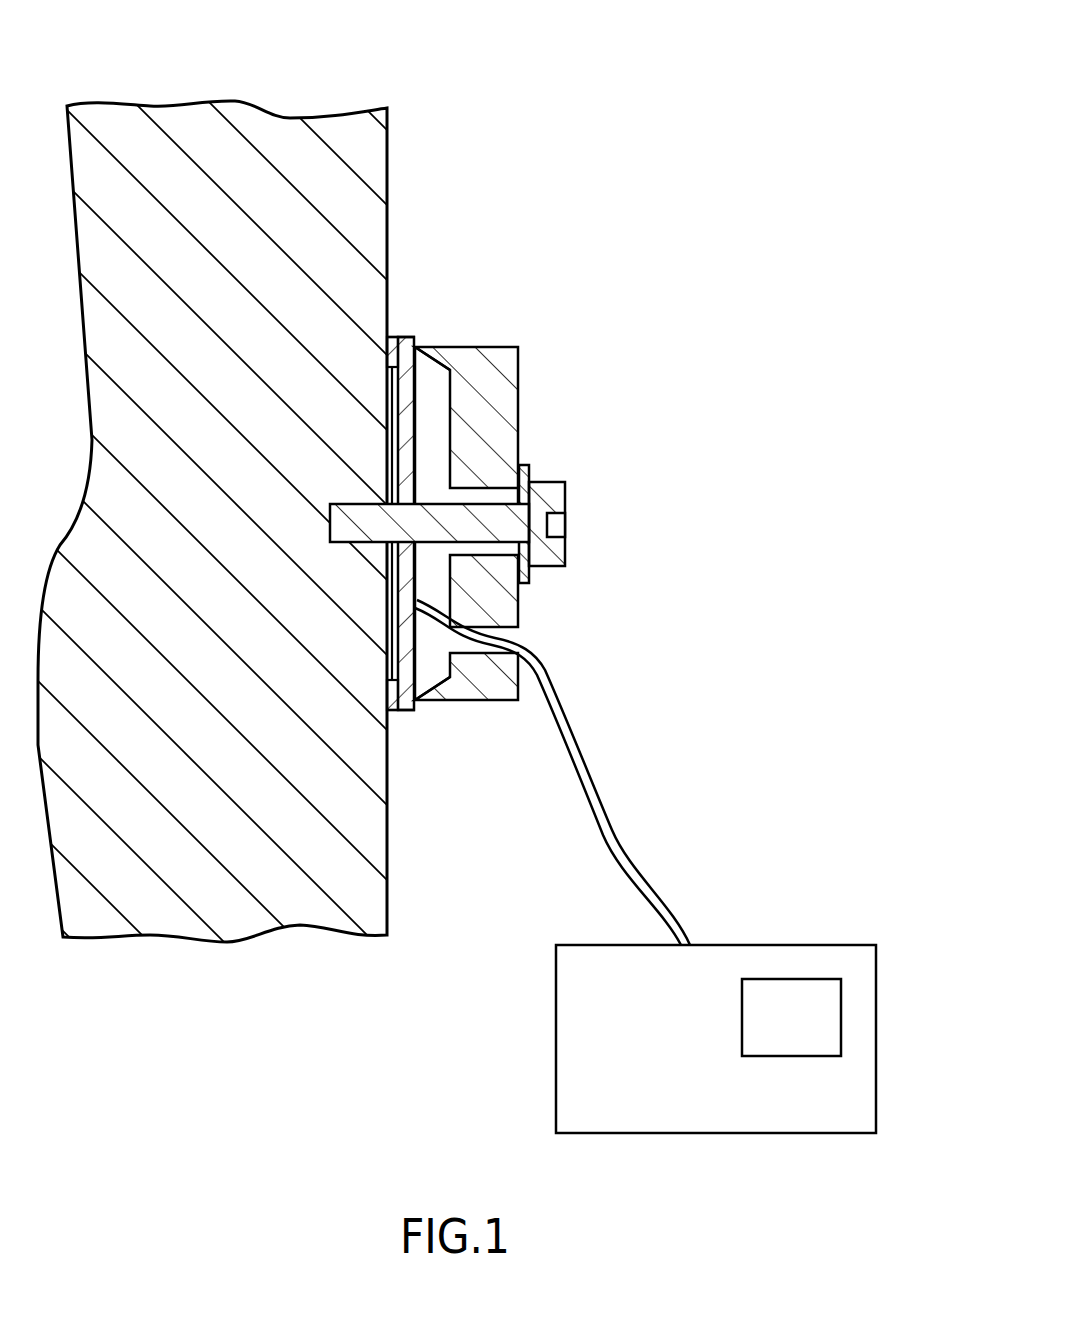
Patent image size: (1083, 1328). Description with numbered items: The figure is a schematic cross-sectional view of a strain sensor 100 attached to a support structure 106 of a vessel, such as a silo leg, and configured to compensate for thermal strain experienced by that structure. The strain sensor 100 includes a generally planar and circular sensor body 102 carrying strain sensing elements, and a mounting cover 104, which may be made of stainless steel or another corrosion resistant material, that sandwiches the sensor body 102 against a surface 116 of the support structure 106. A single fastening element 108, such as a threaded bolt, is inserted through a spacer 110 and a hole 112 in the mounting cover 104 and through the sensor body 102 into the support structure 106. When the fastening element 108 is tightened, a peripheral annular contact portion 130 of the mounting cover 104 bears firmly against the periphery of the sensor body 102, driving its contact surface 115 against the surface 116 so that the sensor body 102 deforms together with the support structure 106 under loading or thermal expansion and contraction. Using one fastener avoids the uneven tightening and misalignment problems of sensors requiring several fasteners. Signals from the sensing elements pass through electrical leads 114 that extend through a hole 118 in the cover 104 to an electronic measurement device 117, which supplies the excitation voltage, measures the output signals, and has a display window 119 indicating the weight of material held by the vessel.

The strain sensor 100 is at (772, 66).
The sensor body 102 is at (406, 699).
The mounting cover 104 is at (506, 380).
The support structure 106 is at (383, 157).
The fastening element 108 is at (560, 552).
The spacer 110 is at (527, 570).
The hole 112 is at (499, 552).
The electrical leads 114 is at (582, 752).
The contact surface 115 is at (397, 338).
The surface 116 is at (387, 298).
The electronic measurement device 117 is at (790, 945).
The hole 118 is at (530, 633).
The display window 119 is at (843, 990).
The peripheral annular contact portion 130 is at (416, 348).